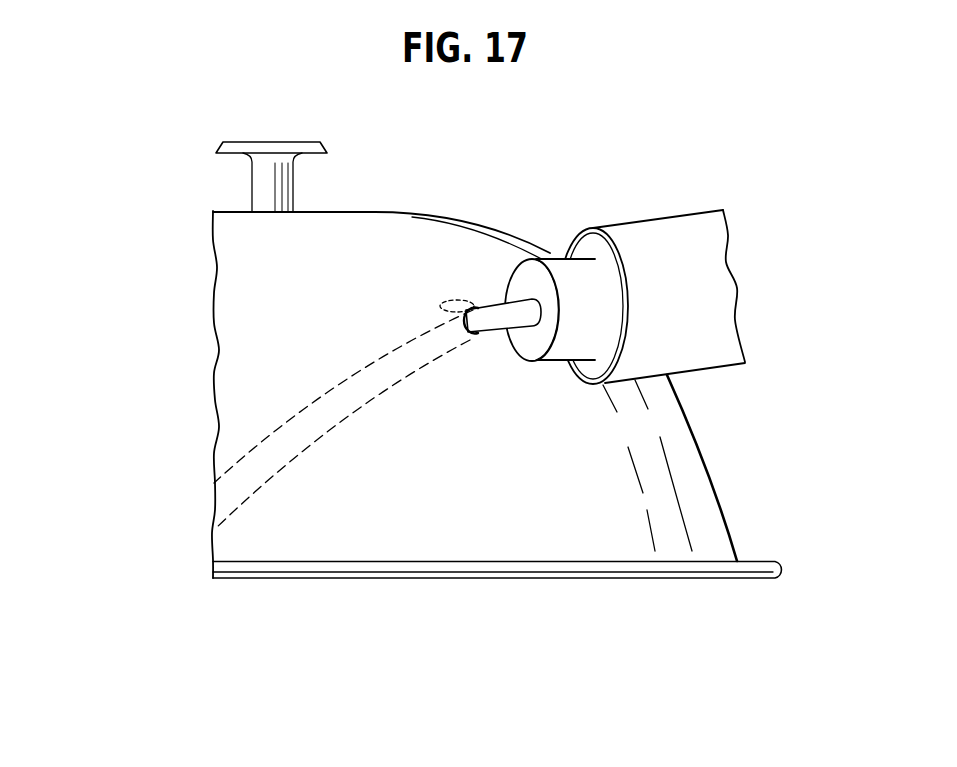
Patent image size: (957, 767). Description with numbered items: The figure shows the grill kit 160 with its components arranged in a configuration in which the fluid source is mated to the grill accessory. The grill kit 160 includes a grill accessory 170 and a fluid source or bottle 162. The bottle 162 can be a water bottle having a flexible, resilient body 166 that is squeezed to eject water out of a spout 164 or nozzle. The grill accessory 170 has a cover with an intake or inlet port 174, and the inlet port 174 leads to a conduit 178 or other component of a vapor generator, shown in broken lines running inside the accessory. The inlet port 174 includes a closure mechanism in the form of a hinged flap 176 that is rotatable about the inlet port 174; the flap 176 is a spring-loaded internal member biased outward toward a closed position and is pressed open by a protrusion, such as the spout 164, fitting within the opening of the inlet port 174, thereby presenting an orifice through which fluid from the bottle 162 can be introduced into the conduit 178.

The grill kit 160 is at (183, 129).
The fluid source or bottle 162 is at (712, 373).
The spout 164 is at (498, 318).
The flexible, resilient body 166 is at (688, 252).
The grill accessory 170 is at (225, 206).
The intake or inlet port 174 is at (473, 338).
The hinged flap 176 is at (455, 298).
The conduit 178 is at (317, 420).